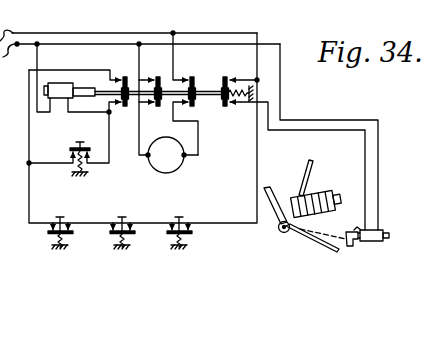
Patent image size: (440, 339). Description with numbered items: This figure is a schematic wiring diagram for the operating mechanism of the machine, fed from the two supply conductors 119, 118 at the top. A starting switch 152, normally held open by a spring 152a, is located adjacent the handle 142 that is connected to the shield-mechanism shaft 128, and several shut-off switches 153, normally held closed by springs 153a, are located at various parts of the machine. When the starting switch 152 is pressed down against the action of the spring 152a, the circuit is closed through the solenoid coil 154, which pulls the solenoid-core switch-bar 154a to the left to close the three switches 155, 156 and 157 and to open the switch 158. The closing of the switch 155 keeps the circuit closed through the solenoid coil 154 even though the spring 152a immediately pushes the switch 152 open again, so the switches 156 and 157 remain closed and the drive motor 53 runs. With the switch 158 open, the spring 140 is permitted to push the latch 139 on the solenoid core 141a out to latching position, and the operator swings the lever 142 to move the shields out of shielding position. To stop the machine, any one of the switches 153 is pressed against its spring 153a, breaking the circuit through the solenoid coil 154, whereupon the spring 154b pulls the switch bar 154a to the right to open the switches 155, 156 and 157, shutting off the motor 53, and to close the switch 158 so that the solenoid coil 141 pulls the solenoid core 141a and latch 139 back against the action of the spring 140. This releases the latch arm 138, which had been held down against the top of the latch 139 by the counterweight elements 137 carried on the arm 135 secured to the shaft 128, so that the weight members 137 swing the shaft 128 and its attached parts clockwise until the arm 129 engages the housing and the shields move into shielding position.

The supply conductor 119 is at (41, 33).
The supply conductor 118 is at (27, 47).
The solenoid coil 154 is at (62, 99).
The solenoid-core switch-bar 154a is at (91, 87).
The spring 154b is at (248, 102).
The switch 155 is at (120, 72).
The switch 156 is at (161, 76).
The switch 157 is at (188, 77).
The switch 158 is at (228, 77).
The starting switch 152 is at (68, 155).
The spring 152a is at (75, 172).
The drive motor 53 is at (178, 170).
The shut-off switches 153 is at (64, 207).
The springs 153a is at (67, 245).
The arm 129 is at (293, 174).
The shaft 128 is at (282, 233).
The handle 142 is at (314, 167).
The counterweight elements 137 is at (317, 194).
The arm 135 is at (338, 197).
The latch arm 138 is at (314, 244).
The latch 139 is at (347, 248).
The spring 140 is at (359, 243).
The solenoid 141 is at (379, 242).
The solenoid core 141a is at (357, 228).